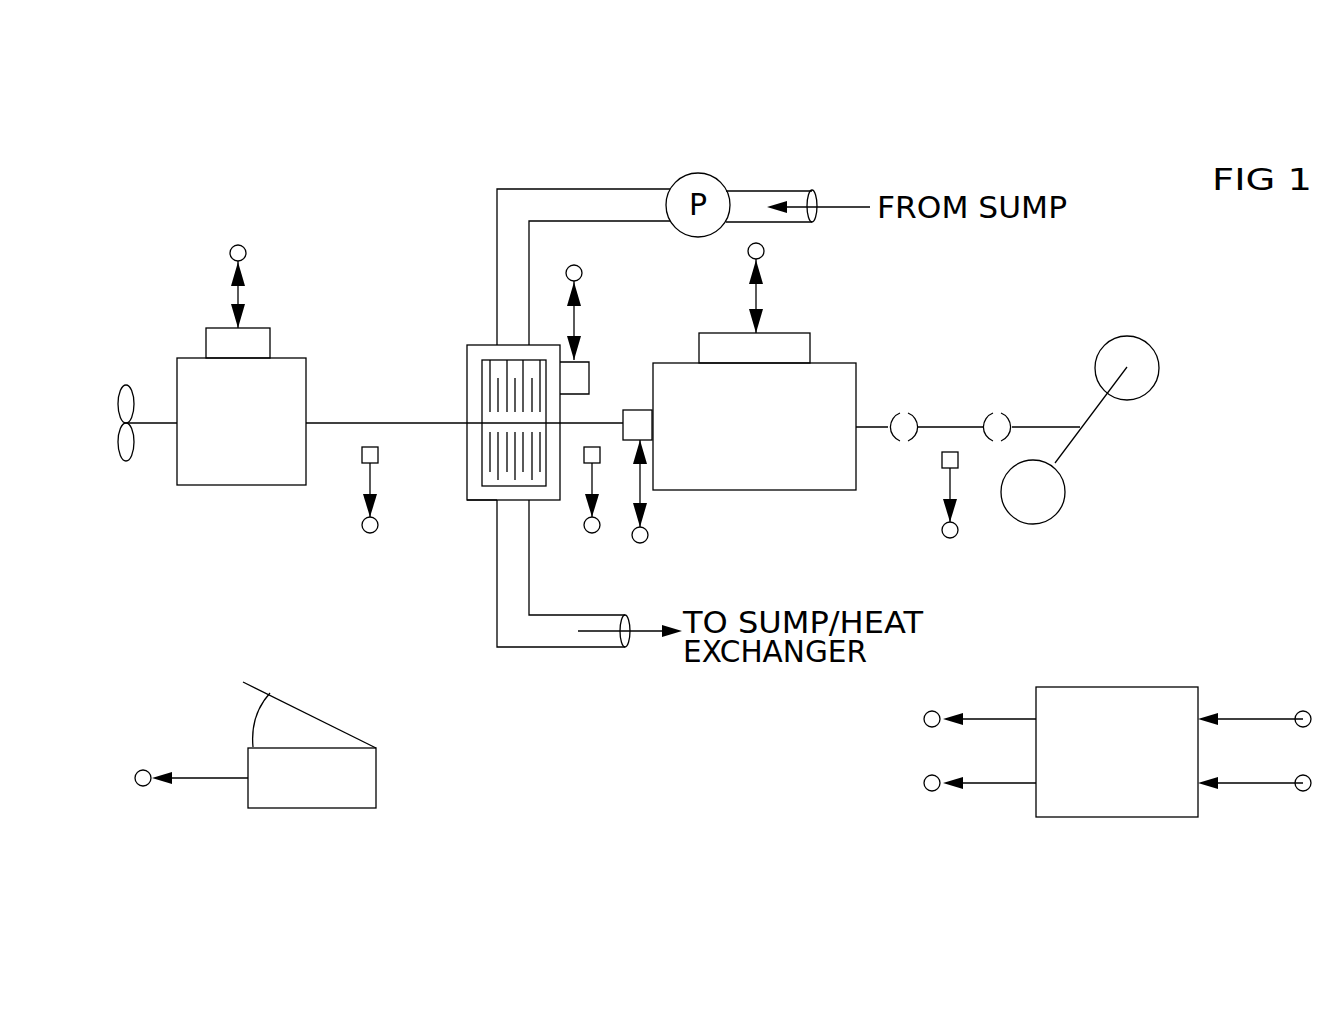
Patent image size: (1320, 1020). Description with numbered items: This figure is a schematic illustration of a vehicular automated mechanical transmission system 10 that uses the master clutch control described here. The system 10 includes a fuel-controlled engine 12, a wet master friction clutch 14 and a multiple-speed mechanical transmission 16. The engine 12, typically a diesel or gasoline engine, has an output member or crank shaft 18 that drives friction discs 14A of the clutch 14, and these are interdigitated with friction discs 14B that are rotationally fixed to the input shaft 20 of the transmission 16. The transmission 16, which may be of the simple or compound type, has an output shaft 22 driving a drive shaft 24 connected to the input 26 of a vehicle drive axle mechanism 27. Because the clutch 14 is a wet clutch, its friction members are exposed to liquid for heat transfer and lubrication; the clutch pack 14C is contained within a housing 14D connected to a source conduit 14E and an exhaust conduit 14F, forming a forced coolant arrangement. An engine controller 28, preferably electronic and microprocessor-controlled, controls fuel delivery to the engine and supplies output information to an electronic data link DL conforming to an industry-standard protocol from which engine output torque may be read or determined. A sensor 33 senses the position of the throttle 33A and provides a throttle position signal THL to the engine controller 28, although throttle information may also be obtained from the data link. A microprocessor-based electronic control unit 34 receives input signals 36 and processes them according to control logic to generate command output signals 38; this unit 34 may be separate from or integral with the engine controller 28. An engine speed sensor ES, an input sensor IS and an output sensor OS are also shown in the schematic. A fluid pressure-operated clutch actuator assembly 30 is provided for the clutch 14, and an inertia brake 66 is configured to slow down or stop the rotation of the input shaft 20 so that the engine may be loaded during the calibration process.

The vehicular automated mechanical transmission system 10 is at (918, 148).
The fuel-controlled engine 12 is at (215, 459).
The wet master friction clutch 14 is at (521, 400).
The friction discs 14A is at (480, 410).
The friction discs 14B is at (483, 478).
The clutch pack 14C is at (480, 510).
The housing 14D is at (477, 343).
The source conduit 14E is at (505, 214).
The exhaust conduit 14F is at (518, 580).
The multiple-speed mechanical transmission 16 is at (752, 463).
The crank shaft 18 is at (362, 422).
The input shaft 20 is at (598, 420).
The output shaft 22 is at (795, 345).
The drive shaft 24 is at (950, 428).
The input 26 is at (1056, 428).
The vehicle drive axle mechanism 27 is at (1118, 460).
The engine controller 28 is at (217, 347).
The clutch actuator assembly 30 is at (578, 378).
The sensor 33 is at (345, 793).
The throttle 33A is at (332, 722).
The electronic control unit 34 is at (1128, 792).
The input signals 36 is at (1263, 815).
The command output signals 38 is at (977, 815).
The inertia brake 66 is at (635, 412).
The electronic data link DL is at (237, 297).
The engine speed sensor ES is at (368, 478).
The input sensor IS is at (609, 505).
The output sensor OS is at (948, 482).
The throttle position signal THL is at (182, 782).